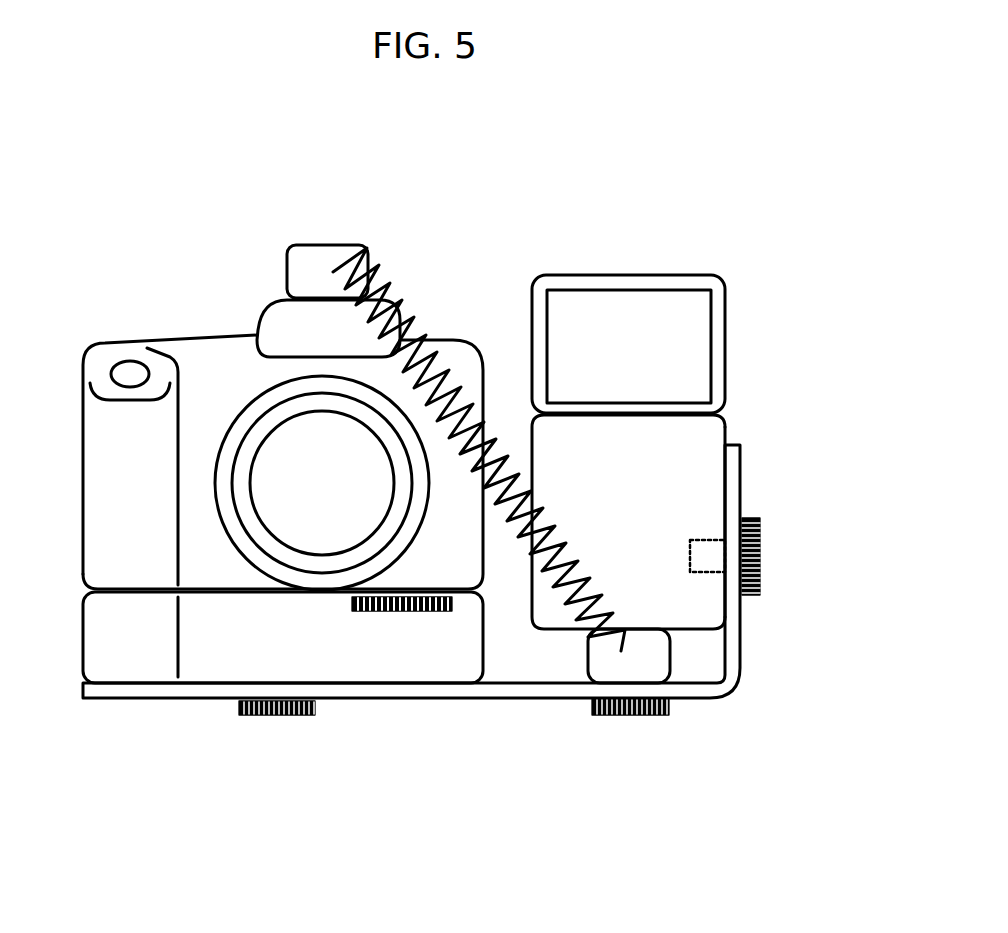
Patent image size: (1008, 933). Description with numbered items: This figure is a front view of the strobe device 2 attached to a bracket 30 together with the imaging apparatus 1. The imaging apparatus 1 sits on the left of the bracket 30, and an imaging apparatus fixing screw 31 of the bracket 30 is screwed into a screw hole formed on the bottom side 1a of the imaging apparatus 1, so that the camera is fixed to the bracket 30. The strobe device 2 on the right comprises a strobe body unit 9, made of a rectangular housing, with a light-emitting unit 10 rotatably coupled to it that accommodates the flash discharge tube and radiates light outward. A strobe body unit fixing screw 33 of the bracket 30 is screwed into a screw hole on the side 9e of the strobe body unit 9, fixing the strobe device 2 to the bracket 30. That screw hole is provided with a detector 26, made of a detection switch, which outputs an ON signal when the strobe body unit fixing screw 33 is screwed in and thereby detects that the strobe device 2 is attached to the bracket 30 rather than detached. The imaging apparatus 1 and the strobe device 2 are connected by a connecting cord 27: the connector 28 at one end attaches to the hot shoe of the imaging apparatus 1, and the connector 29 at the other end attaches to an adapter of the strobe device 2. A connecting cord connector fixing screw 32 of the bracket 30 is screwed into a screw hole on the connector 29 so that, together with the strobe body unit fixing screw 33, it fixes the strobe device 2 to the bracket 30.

The imaging apparatus 1 is at (150, 310).
The bottom side of imaging apparatus 1a is at (150, 683).
The strobe device 2 is at (686, 423).
The strobe body unit 9 is at (687, 488).
The side of strobe body unit 9e is at (727, 437).
The light-emitting unit 10 is at (640, 308).
The detector 26 is at (707, 537).
The connecting cord 27 is at (420, 293).
The connector 28 is at (312, 265).
The connector 29 is at (652, 668).
The bracket 30 is at (493, 707).
The imaging apparatus fixing screw 31 is at (272, 707).
The connecting cord connector fixing screw 32 is at (633, 707).
The strobe body unit fixing screw 33 is at (758, 550).